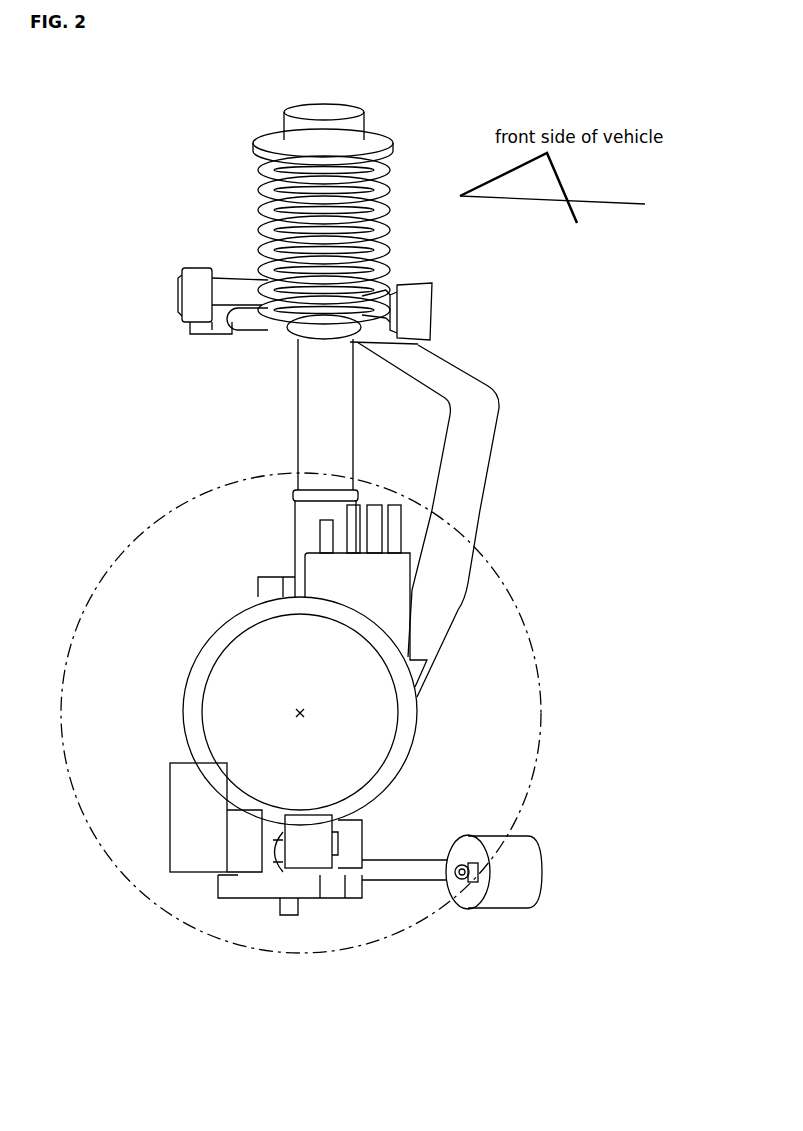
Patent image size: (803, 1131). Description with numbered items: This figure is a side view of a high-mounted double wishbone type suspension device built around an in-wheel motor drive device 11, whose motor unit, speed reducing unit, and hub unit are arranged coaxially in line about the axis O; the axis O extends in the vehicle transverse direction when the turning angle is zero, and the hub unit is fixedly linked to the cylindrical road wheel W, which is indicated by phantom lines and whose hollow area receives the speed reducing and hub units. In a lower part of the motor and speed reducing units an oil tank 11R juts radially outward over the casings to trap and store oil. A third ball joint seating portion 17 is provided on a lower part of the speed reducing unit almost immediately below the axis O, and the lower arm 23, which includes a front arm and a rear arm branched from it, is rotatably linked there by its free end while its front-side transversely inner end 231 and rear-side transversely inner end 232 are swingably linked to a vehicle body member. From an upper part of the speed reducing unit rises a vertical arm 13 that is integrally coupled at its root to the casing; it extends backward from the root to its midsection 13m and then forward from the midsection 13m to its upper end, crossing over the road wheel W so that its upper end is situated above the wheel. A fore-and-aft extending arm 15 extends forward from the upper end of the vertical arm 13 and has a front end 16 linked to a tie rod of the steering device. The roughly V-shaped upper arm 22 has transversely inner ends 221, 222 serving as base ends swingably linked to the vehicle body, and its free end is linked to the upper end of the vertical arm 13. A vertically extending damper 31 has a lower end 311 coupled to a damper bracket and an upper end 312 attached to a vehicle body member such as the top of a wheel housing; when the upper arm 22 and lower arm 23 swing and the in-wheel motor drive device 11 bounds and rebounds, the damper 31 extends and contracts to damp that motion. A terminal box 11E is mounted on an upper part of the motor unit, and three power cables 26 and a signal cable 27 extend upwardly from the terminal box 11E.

The road wheel W is at (158, 517).
The axis O is at (300, 713).
The upper end 312 is at (363, 130).
The damper 31 is at (385, 252).
The upper arm 22 is at (228, 290).
The transversely inner end 221 is at (198, 308).
The transversely inner end 222 is at (428, 318).
The fore-and-aft extending arm 15 is at (252, 322).
The front end 16 is at (218, 332).
The midsection 13m is at (482, 405).
The vertical arm 13 is at (445, 612).
The lower end 311 is at (327, 483).
The signal cable 27 is at (322, 530).
The power cables 26 is at (396, 512).
The terminal box 11E is at (395, 593).
The in-wheel motor drive device 11 is at (405, 760).
The oil tank 11R is at (180, 820).
The front-side transversely inner end 231 is at (302, 845).
The third ball joint seating portion 17 is at (356, 847).
The lower arm 23 is at (470, 860).
The rear-side transversely inner end 232 is at (522, 858).